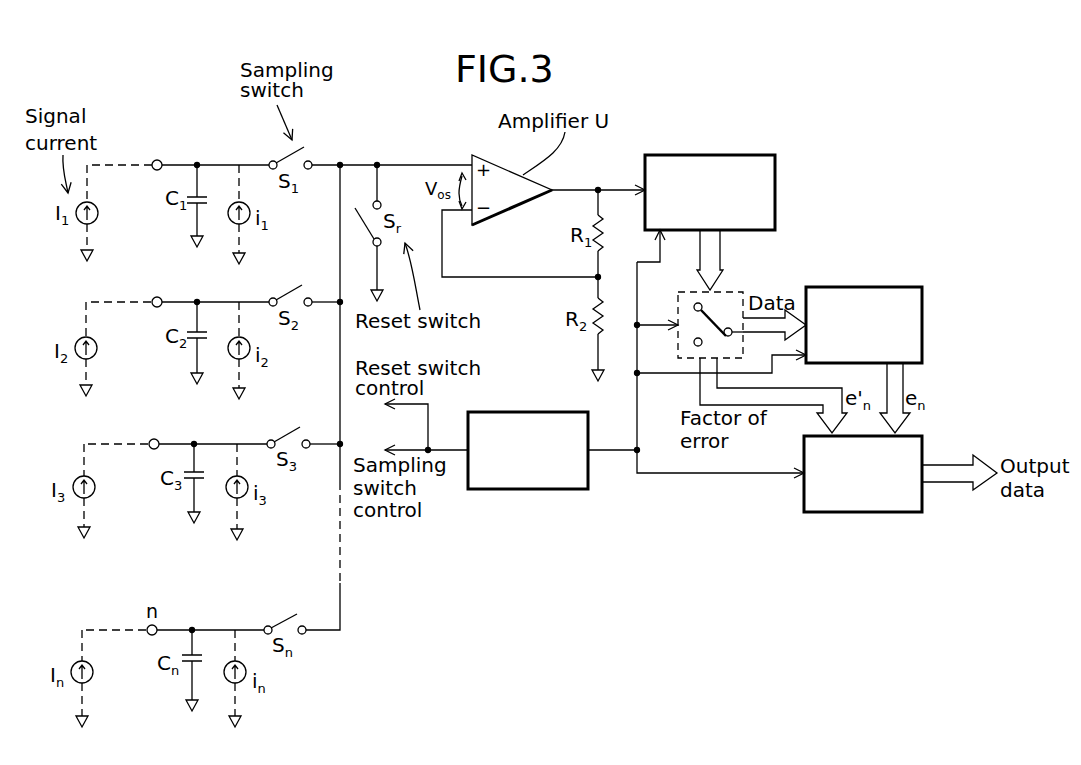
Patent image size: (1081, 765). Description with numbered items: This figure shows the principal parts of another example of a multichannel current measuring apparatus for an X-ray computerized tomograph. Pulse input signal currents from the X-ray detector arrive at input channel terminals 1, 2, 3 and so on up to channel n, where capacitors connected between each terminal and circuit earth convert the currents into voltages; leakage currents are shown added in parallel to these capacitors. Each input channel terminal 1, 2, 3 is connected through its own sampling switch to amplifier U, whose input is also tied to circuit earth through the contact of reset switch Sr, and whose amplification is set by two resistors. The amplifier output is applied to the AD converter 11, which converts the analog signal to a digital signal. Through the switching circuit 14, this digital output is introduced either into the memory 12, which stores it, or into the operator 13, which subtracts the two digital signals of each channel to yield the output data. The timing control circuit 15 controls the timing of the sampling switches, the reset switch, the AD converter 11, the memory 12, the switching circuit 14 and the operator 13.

The input channel terminal 1 is at (156, 152).
The input channel terminal 2 is at (156, 289).
The input channel terminal 3 is at (154, 431).
The AD converter 11 is at (775, 188).
The memory 12 is at (922, 338).
The operator 13 is at (867, 512).
The switching circuit 14 is at (731, 291).
The timing control circuit 15 is at (550, 489).